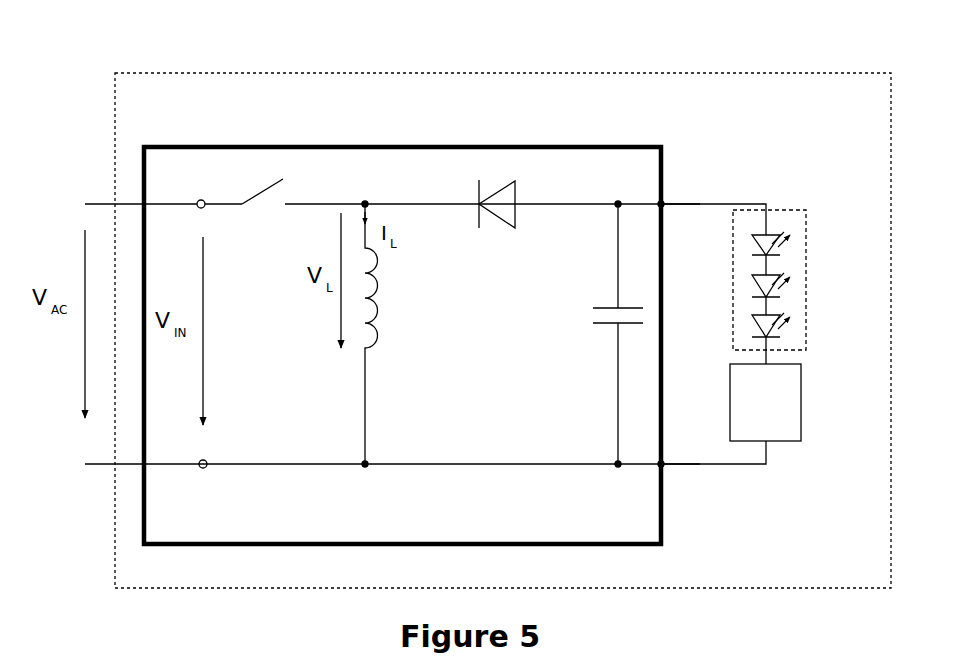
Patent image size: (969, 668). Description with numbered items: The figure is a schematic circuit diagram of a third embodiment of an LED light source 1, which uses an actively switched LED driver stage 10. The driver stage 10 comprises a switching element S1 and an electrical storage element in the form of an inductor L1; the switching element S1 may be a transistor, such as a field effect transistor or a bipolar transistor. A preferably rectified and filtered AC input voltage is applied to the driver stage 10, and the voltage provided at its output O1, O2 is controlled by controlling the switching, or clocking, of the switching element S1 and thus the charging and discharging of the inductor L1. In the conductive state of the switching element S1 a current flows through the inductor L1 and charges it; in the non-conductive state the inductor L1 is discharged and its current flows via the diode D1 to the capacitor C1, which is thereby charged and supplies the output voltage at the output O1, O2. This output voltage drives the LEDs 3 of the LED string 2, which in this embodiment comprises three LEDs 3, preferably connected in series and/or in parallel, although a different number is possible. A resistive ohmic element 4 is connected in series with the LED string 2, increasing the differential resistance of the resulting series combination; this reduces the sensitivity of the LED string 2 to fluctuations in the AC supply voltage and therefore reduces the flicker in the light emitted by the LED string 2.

The LED light source 1 is at (603, 72).
The actively switched LED driver stage 10 is at (663, 170).
The LED string 2 is at (799, 272).
The LED 3 is at (777, 228).
The resistive ohmic element 4 is at (765, 402).
The output O1 is at (664, 207).
The output O2 is at (665, 460).
The switching element S1 is at (262, 209).
The inductor L1 is at (389, 334).
The diode D1 is at (500, 221).
The capacitor C1 is at (596, 334).